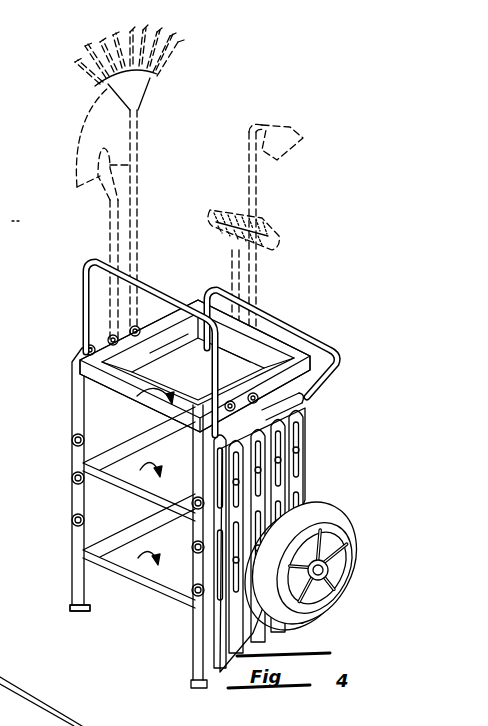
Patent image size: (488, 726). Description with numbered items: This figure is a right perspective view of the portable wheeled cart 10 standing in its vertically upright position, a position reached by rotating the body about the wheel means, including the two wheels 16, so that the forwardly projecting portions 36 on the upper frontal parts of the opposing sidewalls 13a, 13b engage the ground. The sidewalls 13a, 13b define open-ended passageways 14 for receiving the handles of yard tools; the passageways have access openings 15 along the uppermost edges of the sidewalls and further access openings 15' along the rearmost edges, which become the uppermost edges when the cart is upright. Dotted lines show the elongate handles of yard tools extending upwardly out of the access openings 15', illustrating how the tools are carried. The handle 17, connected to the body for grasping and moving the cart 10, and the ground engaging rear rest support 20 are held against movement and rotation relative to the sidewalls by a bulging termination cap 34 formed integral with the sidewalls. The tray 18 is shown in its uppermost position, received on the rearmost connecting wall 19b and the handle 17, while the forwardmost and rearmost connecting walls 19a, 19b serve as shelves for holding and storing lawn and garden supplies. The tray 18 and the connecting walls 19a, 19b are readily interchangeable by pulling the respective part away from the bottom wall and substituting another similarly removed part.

The portable wheeled cart 10 is at (300, 302).
The sidewall 13a is at (64, 407).
The sidewall 13b is at (336, 452).
The open-ended passageways 14 is at (283, 470).
The access openings 15 is at (123, 542).
The access openings 15' is at (172, 363).
The wheels 16 is at (338, 513).
The handle 17 is at (152, 292).
The tray 18 is at (152, 390).
The forwardmost connecting wall 19a is at (150, 592).
The rearmost connecting wall 19b is at (145, 488).
The rear rest support 20 is at (288, 338).
The bulging termination cap 34 is at (304, 400).
The forwardly projecting portions 36 is at (40, 494).